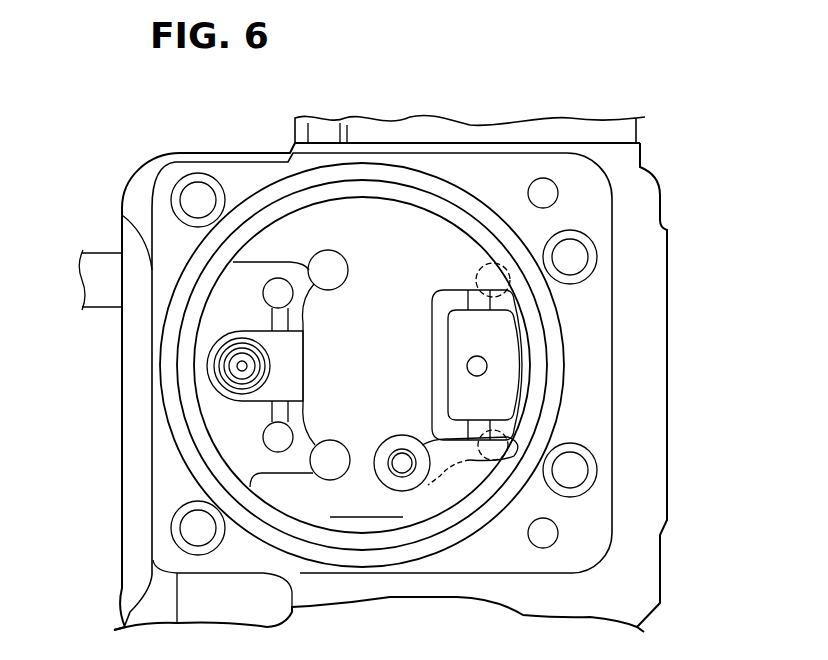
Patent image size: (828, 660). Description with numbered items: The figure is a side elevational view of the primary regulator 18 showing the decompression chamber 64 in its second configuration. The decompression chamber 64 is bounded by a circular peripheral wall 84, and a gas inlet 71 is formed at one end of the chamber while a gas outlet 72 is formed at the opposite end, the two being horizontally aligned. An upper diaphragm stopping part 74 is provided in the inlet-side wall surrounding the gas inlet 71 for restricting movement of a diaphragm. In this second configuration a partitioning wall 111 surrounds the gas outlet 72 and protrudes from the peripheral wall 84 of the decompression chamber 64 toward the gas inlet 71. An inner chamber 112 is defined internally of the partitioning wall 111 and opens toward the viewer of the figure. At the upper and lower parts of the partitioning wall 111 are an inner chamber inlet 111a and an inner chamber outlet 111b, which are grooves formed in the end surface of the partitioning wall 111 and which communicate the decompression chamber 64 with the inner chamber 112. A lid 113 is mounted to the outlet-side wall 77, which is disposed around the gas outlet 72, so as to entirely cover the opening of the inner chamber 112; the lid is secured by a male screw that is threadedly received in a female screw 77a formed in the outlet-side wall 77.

The primary regulator 18 is at (105, 177).
The decompression chamber 64 is at (355, 235).
The upper diaphragm stopping part 74 is at (323, 263).
The peripheral wall 84 is at (465, 240).
The gas inlet 71 is at (242, 366).
The gas outlet 72 is at (478, 366).
The partitioning wall 111 is at (430, 303).
The inner chamber inlet 111a is at (484, 263).
The inner chamber outlet 111b is at (505, 455).
The inner chamber 112 is at (497, 390).
The lid 113 is at (432, 458).
The outlet-side wall 77 is at (418, 483).
The female screw 77a is at (405, 478).